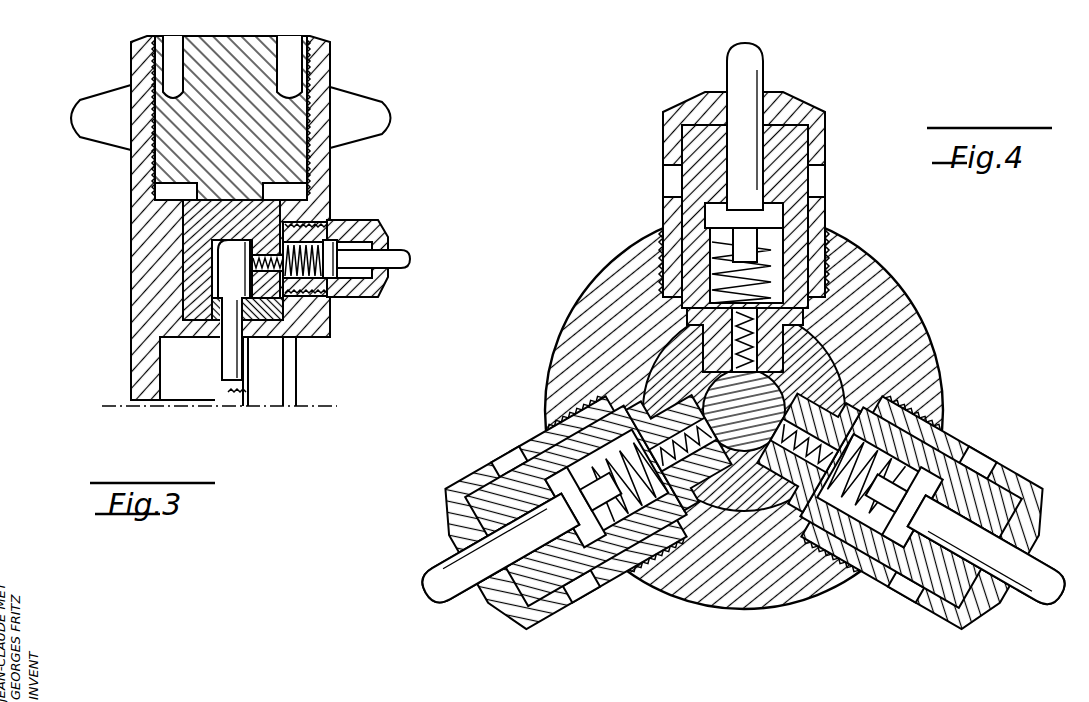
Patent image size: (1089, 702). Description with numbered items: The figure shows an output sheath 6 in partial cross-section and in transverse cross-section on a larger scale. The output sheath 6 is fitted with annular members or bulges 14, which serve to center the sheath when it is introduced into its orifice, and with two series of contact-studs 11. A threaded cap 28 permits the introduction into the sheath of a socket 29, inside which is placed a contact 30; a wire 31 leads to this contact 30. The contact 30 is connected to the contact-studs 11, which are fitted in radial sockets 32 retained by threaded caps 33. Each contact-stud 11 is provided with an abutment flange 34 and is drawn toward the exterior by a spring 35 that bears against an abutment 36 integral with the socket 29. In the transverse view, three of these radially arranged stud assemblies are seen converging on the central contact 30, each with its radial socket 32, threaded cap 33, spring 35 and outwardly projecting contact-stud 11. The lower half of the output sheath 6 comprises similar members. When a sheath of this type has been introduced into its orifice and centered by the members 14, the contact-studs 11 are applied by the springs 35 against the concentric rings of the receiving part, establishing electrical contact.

In FIG. 3, the output sheath 6 is at (140, 372).
In FIG. 4, the output sheath 6 is at (590, 378).
In FIG. 3, the contact-studs 11 is at (392, 257).
In FIG. 4, the contact-studs 11 is at (745, 63).
In FIG. 3, the annular members or bulges 14 is at (82, 114).
In FIG. 3, the threaded cap 28 is at (258, 132).
In FIG. 3, the socket 29 is at (198, 215).
In FIG. 4, the socket 29 is at (740, 488).
In FIG. 3, the contact 30 is at (230, 287).
In FIG. 4, the contact 30 is at (782, 393).
In FIG. 3, the wire 31 is at (236, 392).
In FIG. 3, the radial sockets 32 is at (383, 232).
In FIG. 4, the radial sockets 32 is at (700, 147).
In FIG. 3, the threaded caps 33 is at (343, 222).
In FIG. 4, the threaded caps 33 is at (822, 150).
In FIG. 3, the abutment flange 34 is at (382, 290).
In FIG. 4, the abutment flange 34 is at (743, 213).
In FIG. 3, the spring 35 is at (328, 265).
In FIG. 4, the spring 35 is at (773, 250).
In FIG. 3, the abutment 36 is at (250, 273).
In FIG. 4, the abutment 36 is at (767, 337).